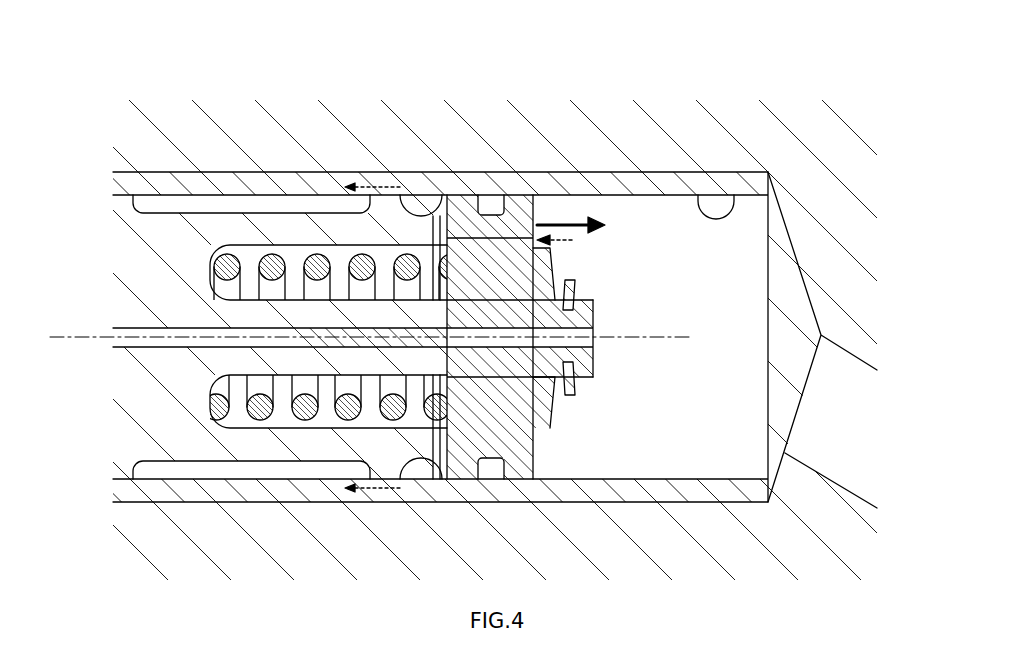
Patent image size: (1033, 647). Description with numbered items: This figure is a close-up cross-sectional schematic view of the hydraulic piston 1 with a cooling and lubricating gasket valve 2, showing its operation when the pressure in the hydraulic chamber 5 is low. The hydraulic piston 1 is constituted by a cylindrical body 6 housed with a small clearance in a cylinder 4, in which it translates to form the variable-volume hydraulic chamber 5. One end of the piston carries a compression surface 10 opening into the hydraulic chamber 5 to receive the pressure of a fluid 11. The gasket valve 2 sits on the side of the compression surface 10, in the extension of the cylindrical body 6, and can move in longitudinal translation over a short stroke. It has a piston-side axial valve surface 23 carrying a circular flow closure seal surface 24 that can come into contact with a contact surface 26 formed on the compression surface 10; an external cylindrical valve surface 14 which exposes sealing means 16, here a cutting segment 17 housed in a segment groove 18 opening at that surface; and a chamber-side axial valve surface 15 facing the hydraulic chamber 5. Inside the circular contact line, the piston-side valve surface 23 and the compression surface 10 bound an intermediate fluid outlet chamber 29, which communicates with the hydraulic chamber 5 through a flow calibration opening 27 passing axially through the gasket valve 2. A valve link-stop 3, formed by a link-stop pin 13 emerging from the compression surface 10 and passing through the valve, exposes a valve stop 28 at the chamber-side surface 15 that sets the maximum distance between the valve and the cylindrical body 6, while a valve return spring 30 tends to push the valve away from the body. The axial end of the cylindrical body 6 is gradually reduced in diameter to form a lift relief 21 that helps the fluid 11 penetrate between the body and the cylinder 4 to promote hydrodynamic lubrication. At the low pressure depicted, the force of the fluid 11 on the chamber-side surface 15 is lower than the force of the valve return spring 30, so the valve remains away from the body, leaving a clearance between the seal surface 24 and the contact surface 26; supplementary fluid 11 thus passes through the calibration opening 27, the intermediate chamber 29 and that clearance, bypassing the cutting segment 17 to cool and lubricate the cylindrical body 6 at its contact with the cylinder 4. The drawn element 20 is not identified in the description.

The hydraulic piston 1 is at (205, 88).
The cooling and lubricating gasket valve 2 is at (518, 225).
The valve link-stop 3 is at (297, 325).
The cylinder 4 is at (730, 172).
The hydraulic chamber 5 is at (740, 248).
The cylindrical body 6 is at (151, 278).
The compression surface 10 is at (466, 480).
The fluid 11 is at (748, 277).
The link-stop pin 13 is at (386, 310).
The external cylindrical valve surface 14 is at (480, 176).
The chamber-side axial valve surface 15 is at (545, 452).
The sealing means 16 is at (499, 210).
The cutting segment 17 is at (523, 168).
The segment groove 18 is at (490, 480).
The guide sleeve 20 is at (185, 463).
The lift relief 21 is at (440, 440).
The piston-side axial valve surface 23 is at (402, 384).
The circular flow closure seal surface 24 is at (426, 210).
The contact surface 26 is at (455, 470).
The flow calibration opening 27 is at (535, 196).
The valve stop 28 is at (547, 402).
The intermediate fluid outlet chamber 29 is at (247, 258).
The valve return spring 30 is at (260, 420).